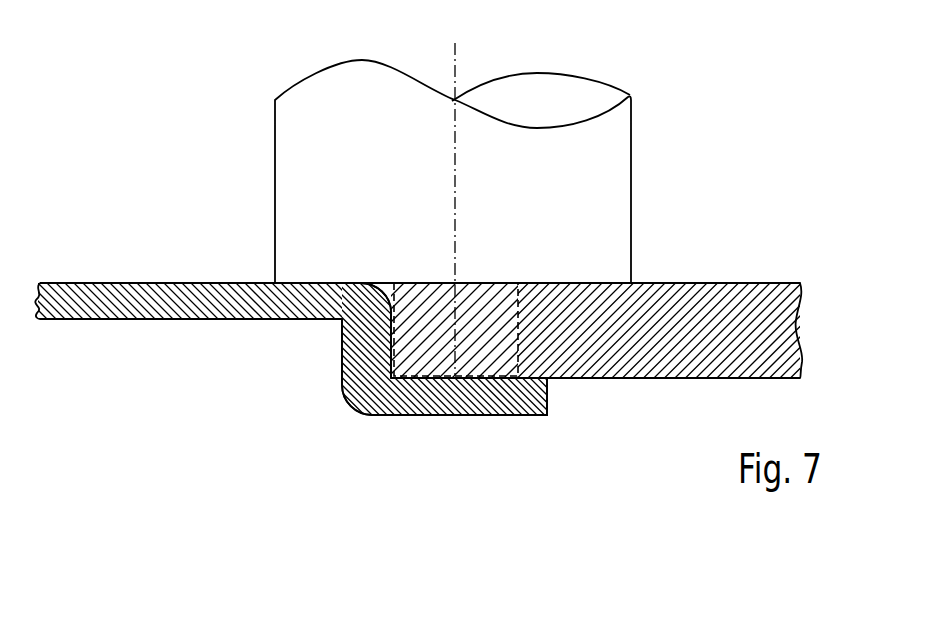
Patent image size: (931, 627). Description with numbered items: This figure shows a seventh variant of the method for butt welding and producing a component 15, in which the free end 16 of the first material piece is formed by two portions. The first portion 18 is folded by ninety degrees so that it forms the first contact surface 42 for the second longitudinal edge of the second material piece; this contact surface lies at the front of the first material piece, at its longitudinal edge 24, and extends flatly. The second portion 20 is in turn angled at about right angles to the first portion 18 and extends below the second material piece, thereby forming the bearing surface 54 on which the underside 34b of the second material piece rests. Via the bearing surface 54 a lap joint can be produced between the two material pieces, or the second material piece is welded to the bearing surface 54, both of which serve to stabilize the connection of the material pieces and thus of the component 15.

The component 15 is at (352, 434).
The free end 16 is at (298, 386).
The first portion 18 is at (352, 342).
The second portion 20 is at (425, 416).
The longitudinal edge 24 is at (391, 268).
The first contact surface 42 is at (404, 329).
The bearing surface 54 is at (541, 372).
The underside 34b is at (611, 388).